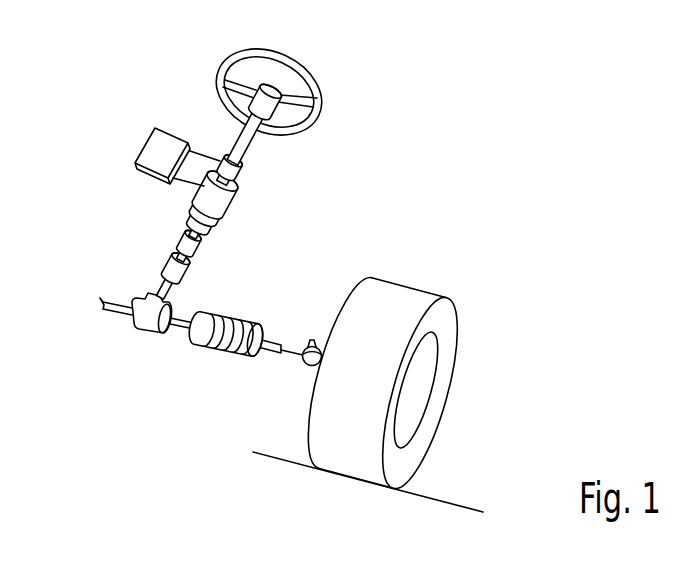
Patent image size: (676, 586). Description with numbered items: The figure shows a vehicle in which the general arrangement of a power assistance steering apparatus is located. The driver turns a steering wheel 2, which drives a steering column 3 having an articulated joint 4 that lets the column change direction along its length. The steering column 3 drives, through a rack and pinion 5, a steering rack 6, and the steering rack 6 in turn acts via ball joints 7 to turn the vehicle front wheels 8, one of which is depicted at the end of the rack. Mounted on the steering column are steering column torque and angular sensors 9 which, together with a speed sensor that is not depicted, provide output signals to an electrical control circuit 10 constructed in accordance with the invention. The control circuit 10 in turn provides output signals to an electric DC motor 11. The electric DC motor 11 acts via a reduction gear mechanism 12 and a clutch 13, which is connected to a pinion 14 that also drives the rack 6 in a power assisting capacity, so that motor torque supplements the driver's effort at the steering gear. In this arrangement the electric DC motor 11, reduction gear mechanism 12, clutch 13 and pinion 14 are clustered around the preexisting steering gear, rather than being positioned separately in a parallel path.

The steering wheel 2 is at (298, 63).
The steering column 3 is at (199, 182).
The articulated joint 4 is at (175, 252).
The rack and pinion 5 is at (140, 318).
The steering rack 6 is at (262, 345).
The ball joints 7 is at (303, 362).
The vehicle front wheels 8 is at (442, 325).
The steering column torque and angular sensors 9 is at (225, 157).
The electrical control circuit 10 is at (163, 148).
The electric DC motor 11 is at (223, 193).
The reduction gear mechanism 12 is at (197, 203).
The clutch 13 is at (205, 212).
The pinion 14 is at (170, 302).